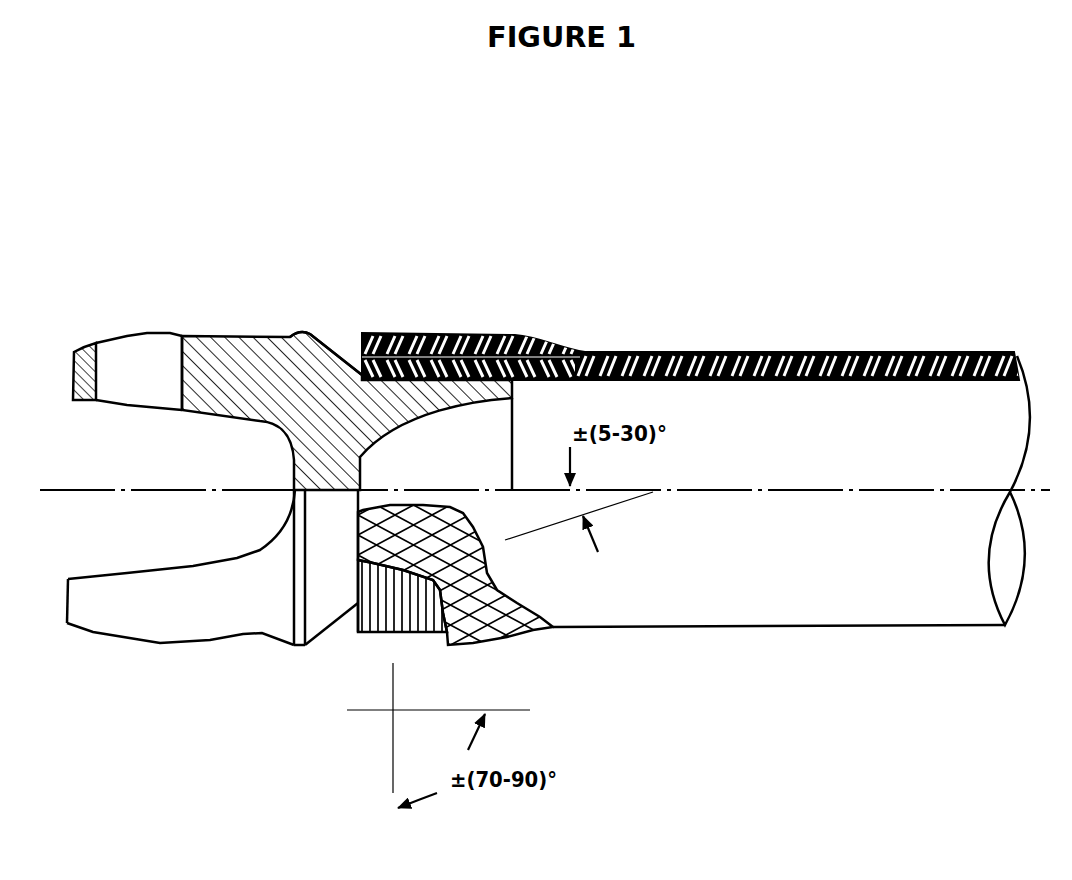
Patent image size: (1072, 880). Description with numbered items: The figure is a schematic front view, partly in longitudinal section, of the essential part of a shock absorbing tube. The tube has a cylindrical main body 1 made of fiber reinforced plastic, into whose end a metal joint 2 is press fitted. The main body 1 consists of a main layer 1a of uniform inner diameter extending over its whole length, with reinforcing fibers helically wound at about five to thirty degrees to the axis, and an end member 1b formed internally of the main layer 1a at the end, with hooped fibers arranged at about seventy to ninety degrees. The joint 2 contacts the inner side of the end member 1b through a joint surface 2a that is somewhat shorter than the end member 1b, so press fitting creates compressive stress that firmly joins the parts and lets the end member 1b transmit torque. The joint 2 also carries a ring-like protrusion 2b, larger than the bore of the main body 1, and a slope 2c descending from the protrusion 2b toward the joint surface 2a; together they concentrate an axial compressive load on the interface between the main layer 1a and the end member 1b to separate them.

The main body 1 is at (735, 640).
The main layer 1a is at (755, 353).
The end member 1b is at (422, 336).
The metal joint 2 is at (163, 660).
The joint surface 2a is at (492, 336).
The ring-like protrusion 2b is at (307, 333).
The slope 2c is at (338, 346).